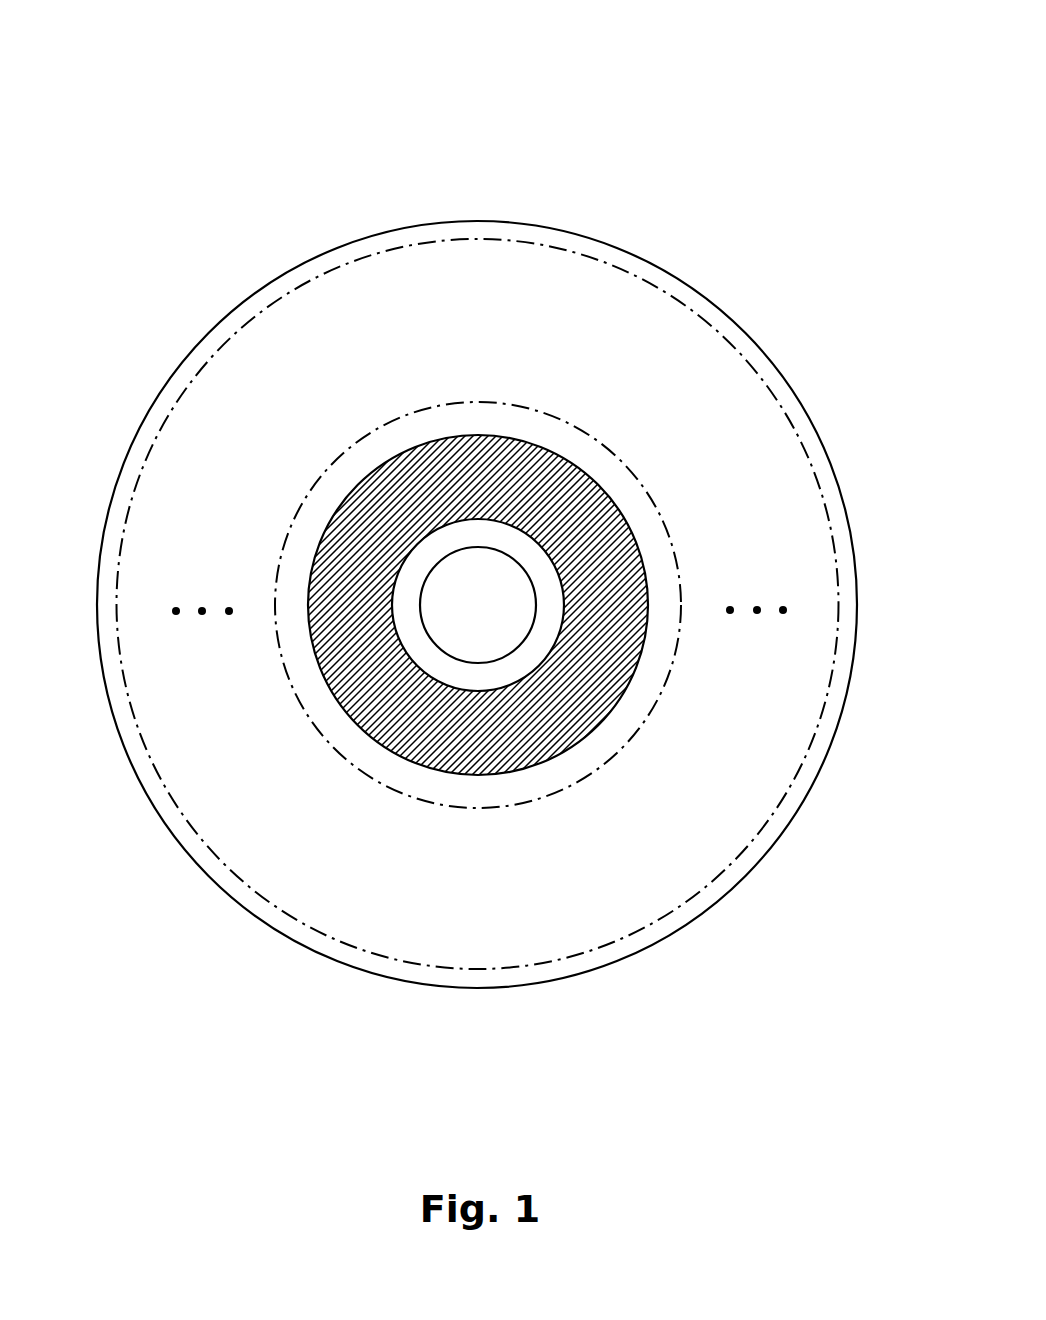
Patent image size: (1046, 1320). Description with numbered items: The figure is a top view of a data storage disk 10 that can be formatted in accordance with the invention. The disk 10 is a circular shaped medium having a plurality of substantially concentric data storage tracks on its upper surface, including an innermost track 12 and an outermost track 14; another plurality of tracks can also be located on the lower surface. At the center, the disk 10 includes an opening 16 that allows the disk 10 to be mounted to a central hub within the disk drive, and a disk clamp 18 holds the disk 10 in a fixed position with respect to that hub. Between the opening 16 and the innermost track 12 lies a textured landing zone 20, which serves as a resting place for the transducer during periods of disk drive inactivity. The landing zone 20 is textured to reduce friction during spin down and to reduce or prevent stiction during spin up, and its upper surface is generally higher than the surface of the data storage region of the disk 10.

The data storage disk 10 is at (180, 88).
The innermost track 12 is at (592, 773).
The outermost track 14 is at (190, 822).
The opening 16 is at (498, 622).
The disk clamp 18 is at (502, 538).
The textured landing zone 20 is at (350, 550).